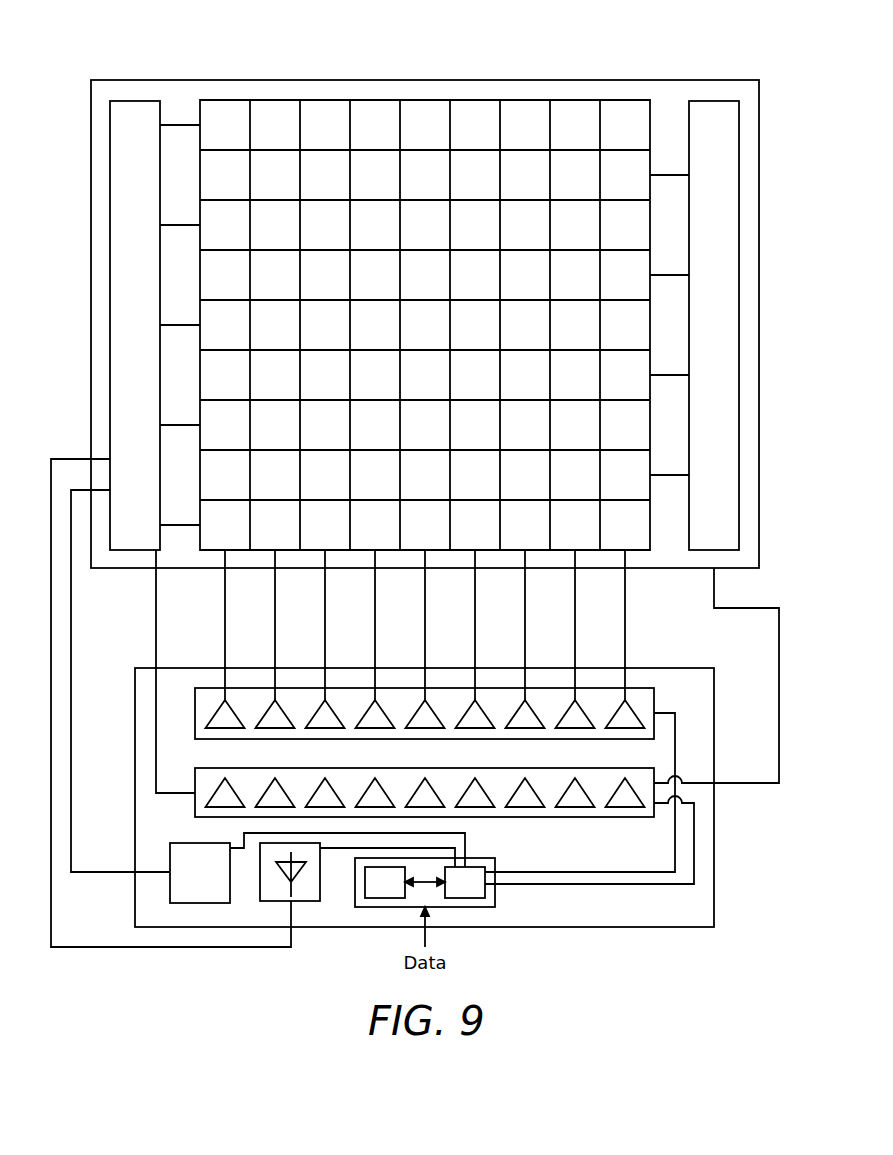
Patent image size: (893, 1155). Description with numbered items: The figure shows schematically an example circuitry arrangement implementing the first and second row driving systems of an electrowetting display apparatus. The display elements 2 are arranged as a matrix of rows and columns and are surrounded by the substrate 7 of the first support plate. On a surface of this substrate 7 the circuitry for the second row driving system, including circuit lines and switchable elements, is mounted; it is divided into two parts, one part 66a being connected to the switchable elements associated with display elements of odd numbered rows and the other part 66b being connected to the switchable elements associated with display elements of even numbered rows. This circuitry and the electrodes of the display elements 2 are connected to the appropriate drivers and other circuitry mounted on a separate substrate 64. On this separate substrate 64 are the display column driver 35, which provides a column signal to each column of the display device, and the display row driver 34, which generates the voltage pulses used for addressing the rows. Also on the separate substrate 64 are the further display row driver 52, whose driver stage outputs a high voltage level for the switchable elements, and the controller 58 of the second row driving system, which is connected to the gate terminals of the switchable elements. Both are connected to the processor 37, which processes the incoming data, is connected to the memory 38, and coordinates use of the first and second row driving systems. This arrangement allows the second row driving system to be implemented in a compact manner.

The display elements 2 is at (312, 110).
The substrate 7 is at (740, 80).
The circuitry part 66a is at (110, 113).
The circuitry part 66b is at (739, 113).
The display column driver 35 is at (645, 688).
The display row driver 34 is at (633, 818).
The separate substrate 64 is at (714, 684).
The controller 58 is at (170, 852).
The further display row driver 52 is at (306, 903).
The memory 38 is at (385, 882).
The processor 37 is at (465, 882).